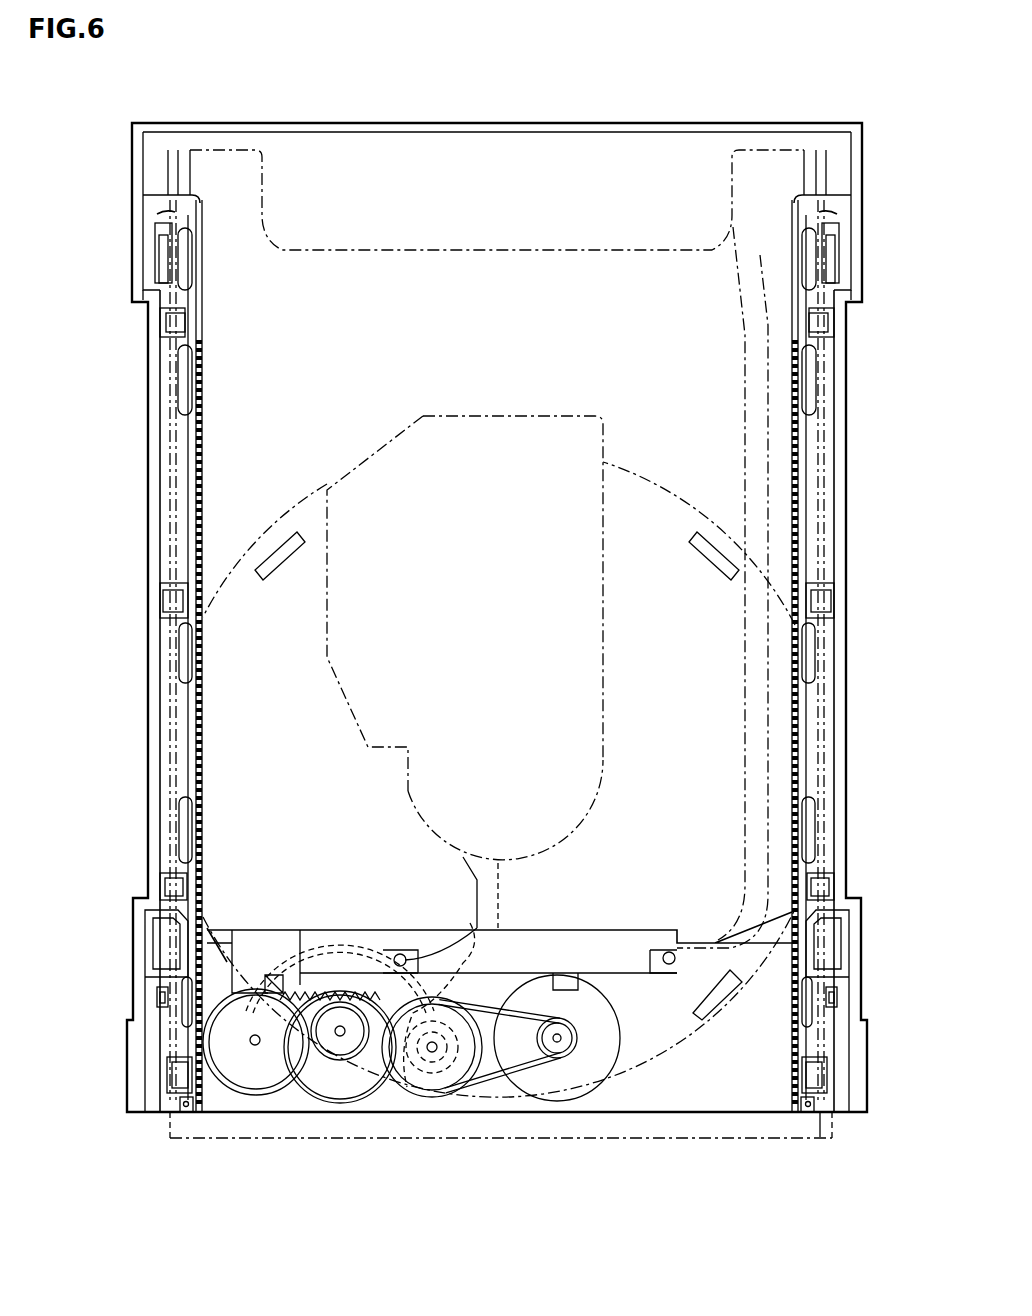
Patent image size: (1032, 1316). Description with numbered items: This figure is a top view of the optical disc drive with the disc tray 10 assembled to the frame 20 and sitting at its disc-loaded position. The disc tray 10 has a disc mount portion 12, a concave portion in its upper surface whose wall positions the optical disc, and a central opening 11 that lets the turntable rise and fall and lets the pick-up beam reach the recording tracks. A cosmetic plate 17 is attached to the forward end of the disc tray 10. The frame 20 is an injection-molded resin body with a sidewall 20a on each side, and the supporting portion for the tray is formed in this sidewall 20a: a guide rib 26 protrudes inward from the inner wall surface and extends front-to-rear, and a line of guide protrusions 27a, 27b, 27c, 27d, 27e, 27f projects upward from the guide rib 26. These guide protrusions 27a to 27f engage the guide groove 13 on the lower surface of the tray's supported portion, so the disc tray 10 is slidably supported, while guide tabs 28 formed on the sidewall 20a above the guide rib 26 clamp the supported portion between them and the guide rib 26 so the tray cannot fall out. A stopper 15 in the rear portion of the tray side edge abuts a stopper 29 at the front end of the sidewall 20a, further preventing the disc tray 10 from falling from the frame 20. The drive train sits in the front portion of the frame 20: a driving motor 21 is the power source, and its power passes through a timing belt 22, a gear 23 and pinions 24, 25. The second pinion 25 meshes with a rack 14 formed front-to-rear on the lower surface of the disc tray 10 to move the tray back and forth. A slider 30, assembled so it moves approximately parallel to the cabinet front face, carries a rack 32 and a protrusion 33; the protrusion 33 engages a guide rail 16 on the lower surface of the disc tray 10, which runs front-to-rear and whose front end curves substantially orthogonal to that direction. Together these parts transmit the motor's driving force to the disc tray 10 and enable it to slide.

The disc tray 10 is at (852, 522).
The opening 11 is at (517, 416).
The disc mount portion 12 is at (375, 802).
The guide groove 13 is at (170, 480).
The rack 14 is at (195, 552).
The stopper 15 is at (160, 212).
The guide rail 16 is at (505, 895).
The cosmetic plate 17 is at (675, 1128).
The frame 20 is at (877, 459).
The sidewall 20a is at (160, 520).
The driving motor 21 is at (557, 1075).
The timing belt 22 is at (497, 1080).
The gear 23 is at (432, 1075).
The pinion 24 is at (345, 1080).
The second pinion 25 is at (255, 1075).
The guide rib 26 is at (188, 740).
The guide protrusion 27a is at (187, 1112).
The guide protrusion 27b is at (162, 998).
The guide protrusion 27c is at (185, 832).
The guide protrusion 27d is at (185, 652).
The guide protrusion 27e is at (185, 380).
The guide protrusion 27f is at (185, 260).
The guide tab 28 is at (165, 322).
The stopper 29 is at (165, 945).
The slider 30 is at (265, 950).
The rack 32 is at (325, 992).
The protrusion 33 is at (400, 953).